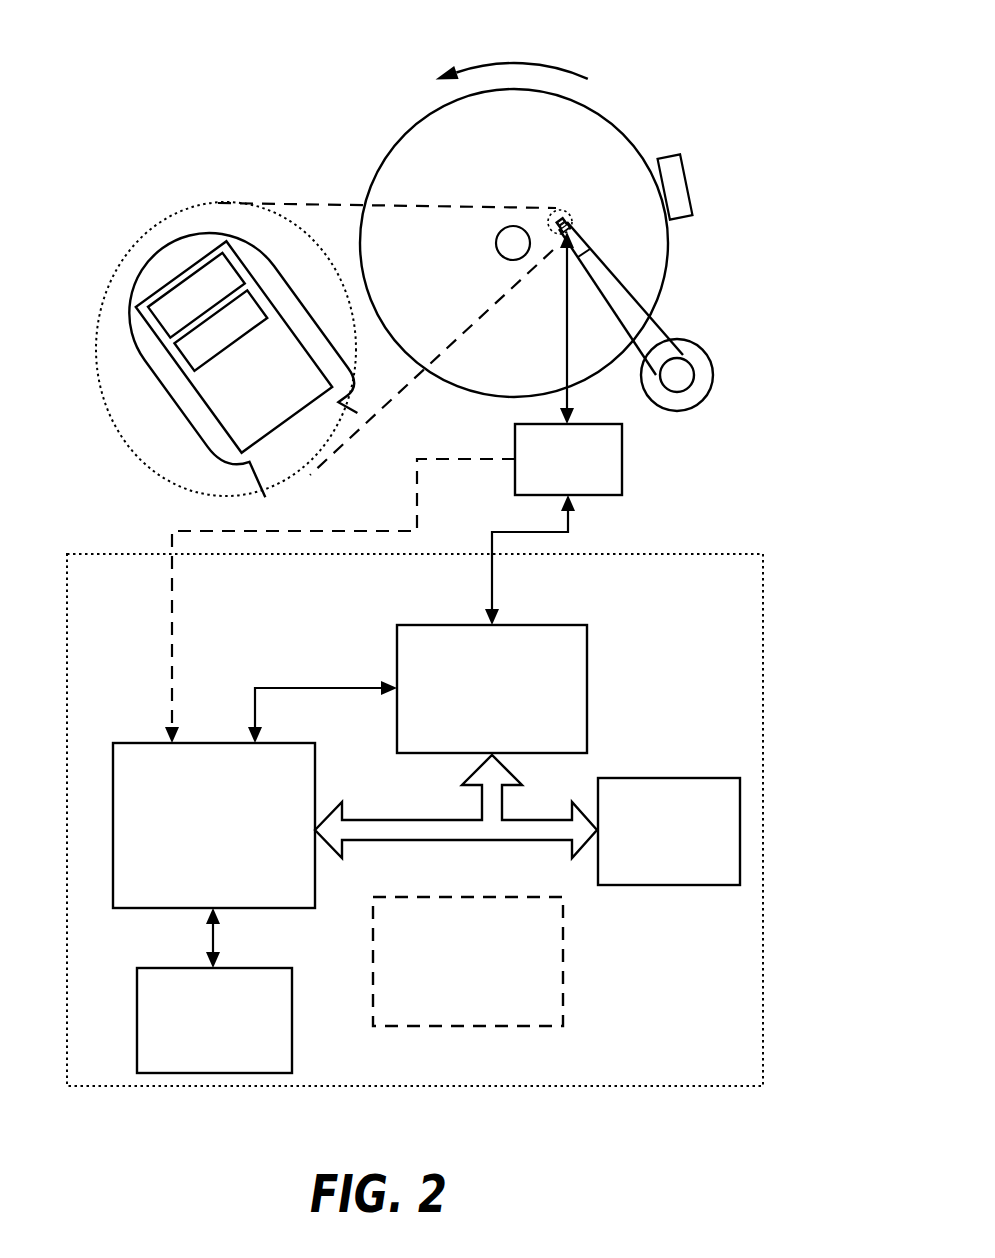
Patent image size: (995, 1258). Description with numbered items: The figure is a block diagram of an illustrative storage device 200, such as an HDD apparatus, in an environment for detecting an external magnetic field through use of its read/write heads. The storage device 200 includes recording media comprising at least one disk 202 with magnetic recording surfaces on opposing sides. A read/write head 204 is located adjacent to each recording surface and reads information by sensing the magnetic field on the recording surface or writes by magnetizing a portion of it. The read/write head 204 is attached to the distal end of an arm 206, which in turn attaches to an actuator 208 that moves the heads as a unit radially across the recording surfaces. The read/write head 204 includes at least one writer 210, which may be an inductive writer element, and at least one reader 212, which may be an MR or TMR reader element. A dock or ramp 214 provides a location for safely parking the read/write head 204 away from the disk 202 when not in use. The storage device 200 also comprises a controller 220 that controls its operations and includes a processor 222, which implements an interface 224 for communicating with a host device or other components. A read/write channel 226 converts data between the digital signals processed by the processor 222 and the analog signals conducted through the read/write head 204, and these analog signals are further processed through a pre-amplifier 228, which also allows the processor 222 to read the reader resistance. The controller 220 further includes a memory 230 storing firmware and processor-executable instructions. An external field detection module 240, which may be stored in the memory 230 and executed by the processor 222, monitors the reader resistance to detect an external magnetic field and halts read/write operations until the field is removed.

The storage device 200 is at (90, 60).
The disk 202 is at (530, 172).
The read/write head 204 is at (589, 202).
The arm 206 is at (623, 303).
The actuator 208 is at (700, 360).
The writer 210 is at (183, 302).
The reader 212 is at (215, 333).
The ramp 214 is at (677, 188).
The controller 220 is at (755, 1075).
The processor 222 is at (232, 857).
The interface 224 is at (687, 875).
The read/write channel 226 is at (512, 718).
The pre-amplifier 228 is at (585, 487).
The memory 230 is at (232, 1050).
The external field detection module 240 is at (485, 1020).